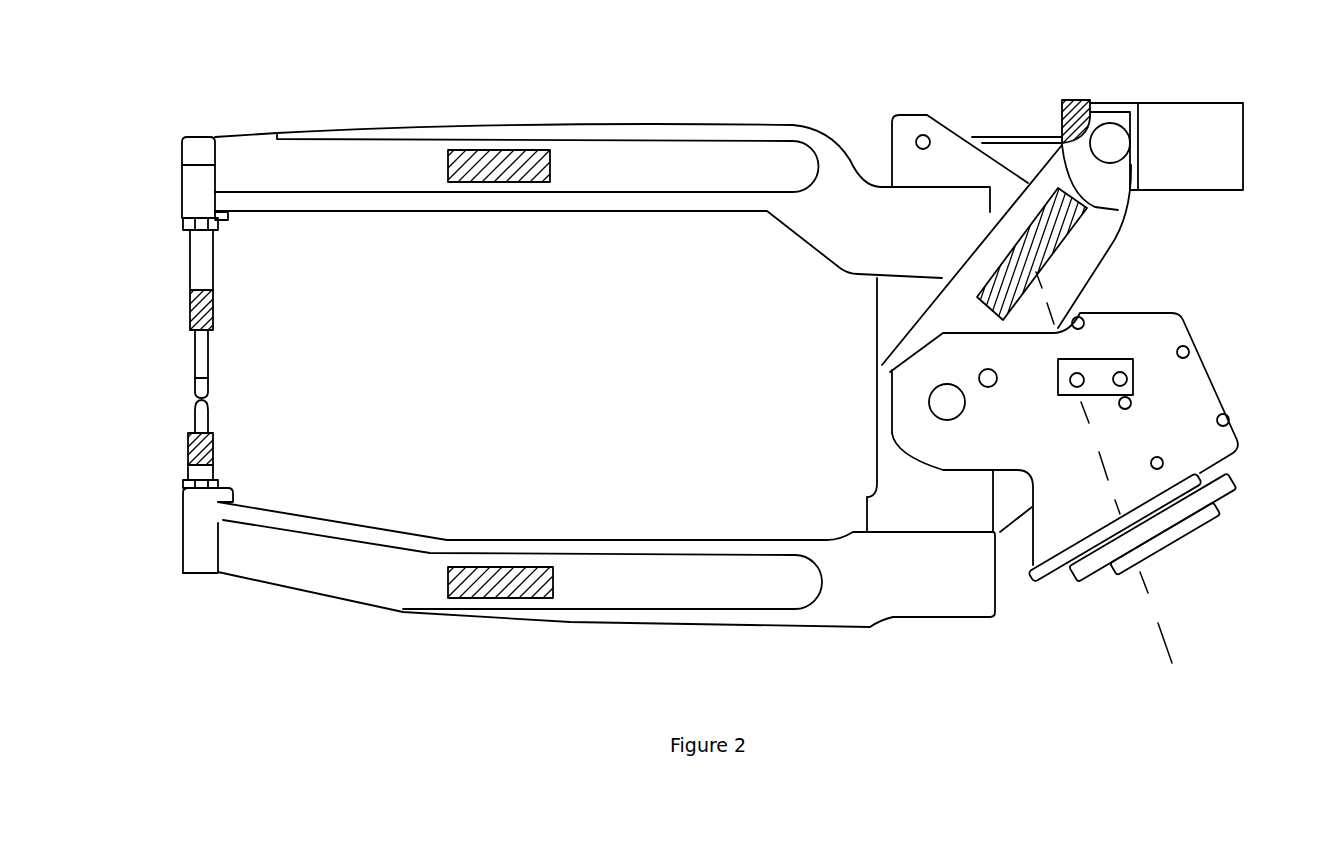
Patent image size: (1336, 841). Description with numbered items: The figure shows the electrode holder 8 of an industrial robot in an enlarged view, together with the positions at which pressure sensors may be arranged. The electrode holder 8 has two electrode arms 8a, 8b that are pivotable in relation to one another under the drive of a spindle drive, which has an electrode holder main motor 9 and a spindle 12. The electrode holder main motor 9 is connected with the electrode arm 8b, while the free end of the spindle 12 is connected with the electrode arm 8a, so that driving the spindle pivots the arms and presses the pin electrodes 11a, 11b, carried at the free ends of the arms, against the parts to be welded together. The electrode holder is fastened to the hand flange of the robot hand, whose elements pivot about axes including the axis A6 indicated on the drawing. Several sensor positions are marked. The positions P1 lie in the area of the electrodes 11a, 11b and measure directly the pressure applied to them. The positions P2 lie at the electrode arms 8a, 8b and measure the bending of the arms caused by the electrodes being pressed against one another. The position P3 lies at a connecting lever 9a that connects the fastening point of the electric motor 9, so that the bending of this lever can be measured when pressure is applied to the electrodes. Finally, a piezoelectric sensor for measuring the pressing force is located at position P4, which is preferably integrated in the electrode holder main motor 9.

The electrode holder 8 is at (240, 594).
The electrode arm 8a is at (401, 153).
The electrode arm 8b is at (341, 565).
The electrode holder main motor 9 is at (1212, 136).
The connecting lever 9a is at (1048, 292).
The pin electrode 11a is at (184, 276).
The pin electrode 11b is at (184, 432).
The spindle 12 is at (1012, 136).
The pressure sensor position P1 is at (213, 299).
The pressure sensor position P2 is at (505, 135).
The pressure sensor position P3 is at (1073, 228).
The piezoelectric sensor position P4 is at (1078, 98).
The axis A6 is at (1170, 637).